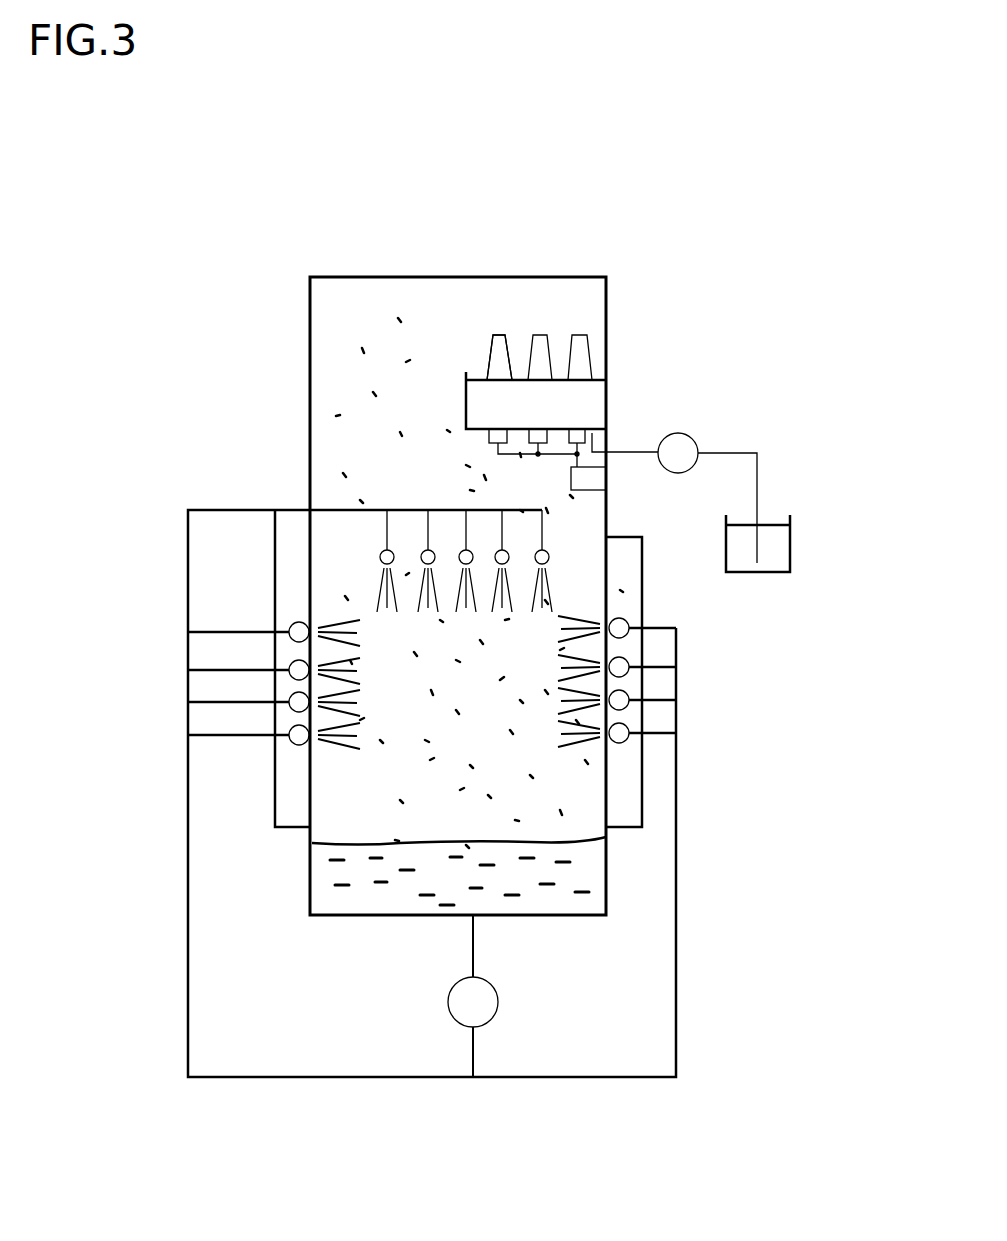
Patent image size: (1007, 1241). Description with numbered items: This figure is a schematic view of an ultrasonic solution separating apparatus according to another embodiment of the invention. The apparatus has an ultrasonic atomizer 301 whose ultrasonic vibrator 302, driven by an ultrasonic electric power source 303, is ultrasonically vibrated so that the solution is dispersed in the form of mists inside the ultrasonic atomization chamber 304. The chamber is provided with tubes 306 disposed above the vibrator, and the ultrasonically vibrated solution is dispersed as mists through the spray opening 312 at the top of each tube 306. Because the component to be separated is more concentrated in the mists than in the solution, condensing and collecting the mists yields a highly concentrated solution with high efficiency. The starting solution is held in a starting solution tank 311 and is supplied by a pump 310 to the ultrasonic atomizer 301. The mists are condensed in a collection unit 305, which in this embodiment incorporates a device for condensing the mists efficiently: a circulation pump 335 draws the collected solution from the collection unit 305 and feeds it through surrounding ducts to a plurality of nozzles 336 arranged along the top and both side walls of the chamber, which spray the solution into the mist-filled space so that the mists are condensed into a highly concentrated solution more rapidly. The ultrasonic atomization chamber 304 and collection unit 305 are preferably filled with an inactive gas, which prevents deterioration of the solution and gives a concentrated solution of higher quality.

The ultrasonic atomizer 301 is at (587, 506).
The ultrasonic vibrator 302 is at (562, 419).
The ultrasonic electric power source 303 is at (608, 477).
The ultrasonic atomization chamber 304 is at (578, 300).
The collection unit 305 is at (372, 825).
The tube 306 is at (489, 345).
The pump 310 is at (684, 433).
The starting solution tank 311 is at (791, 538).
The spray opening 312 is at (497, 334).
The circulation pump 335 is at (500, 1000).
The nozzle 336 is at (383, 552).